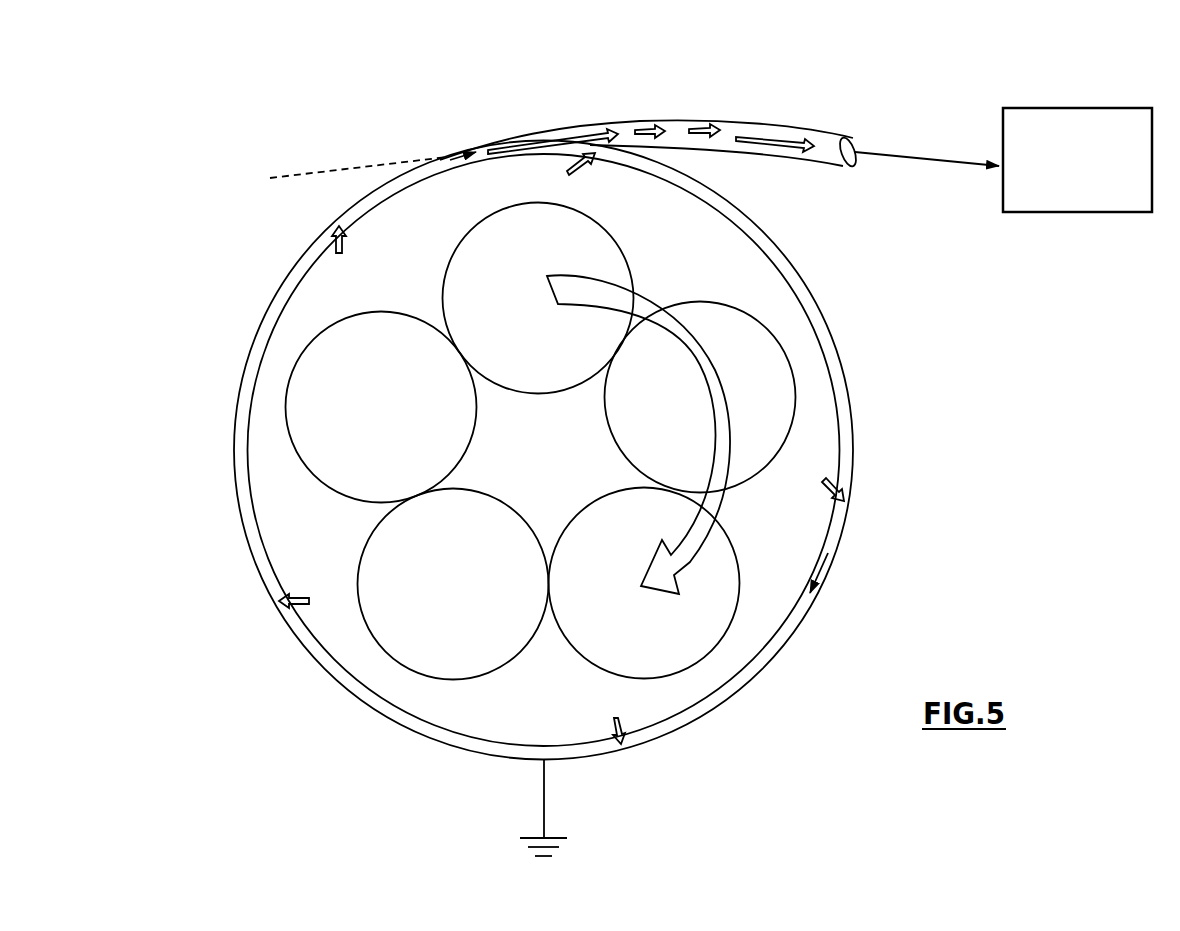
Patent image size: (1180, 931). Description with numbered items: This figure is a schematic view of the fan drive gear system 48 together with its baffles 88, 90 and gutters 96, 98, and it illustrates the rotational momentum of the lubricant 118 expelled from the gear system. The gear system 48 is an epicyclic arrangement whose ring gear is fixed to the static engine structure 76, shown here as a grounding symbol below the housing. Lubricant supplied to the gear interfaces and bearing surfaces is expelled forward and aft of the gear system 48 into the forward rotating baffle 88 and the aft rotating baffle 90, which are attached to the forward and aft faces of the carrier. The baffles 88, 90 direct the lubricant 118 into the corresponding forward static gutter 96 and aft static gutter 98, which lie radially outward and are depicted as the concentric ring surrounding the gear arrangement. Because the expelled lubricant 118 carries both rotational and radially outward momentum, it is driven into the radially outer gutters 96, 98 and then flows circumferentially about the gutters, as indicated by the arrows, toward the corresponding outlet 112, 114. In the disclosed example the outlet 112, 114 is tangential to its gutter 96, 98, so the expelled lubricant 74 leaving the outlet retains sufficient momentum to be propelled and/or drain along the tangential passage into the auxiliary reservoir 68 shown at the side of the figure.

The fan drive gear system 48 is at (556, 464).
The auxiliary reservoir 68 is at (1085, 108).
The expelled lubricant 74 is at (780, 137).
The static engine structure 76 is at (545, 808).
The forward rotating baffle 88 is at (496, 450).
The aft rotating baffle 90 is at (272, 546).
The forward static gutter 96 is at (543, 464).
The aft static gutter 98 is at (376, 712).
The outlet 112 is at (613, 94).
The outlet 114 is at (601, 123).
The lubricant 118 is at (556, 164).